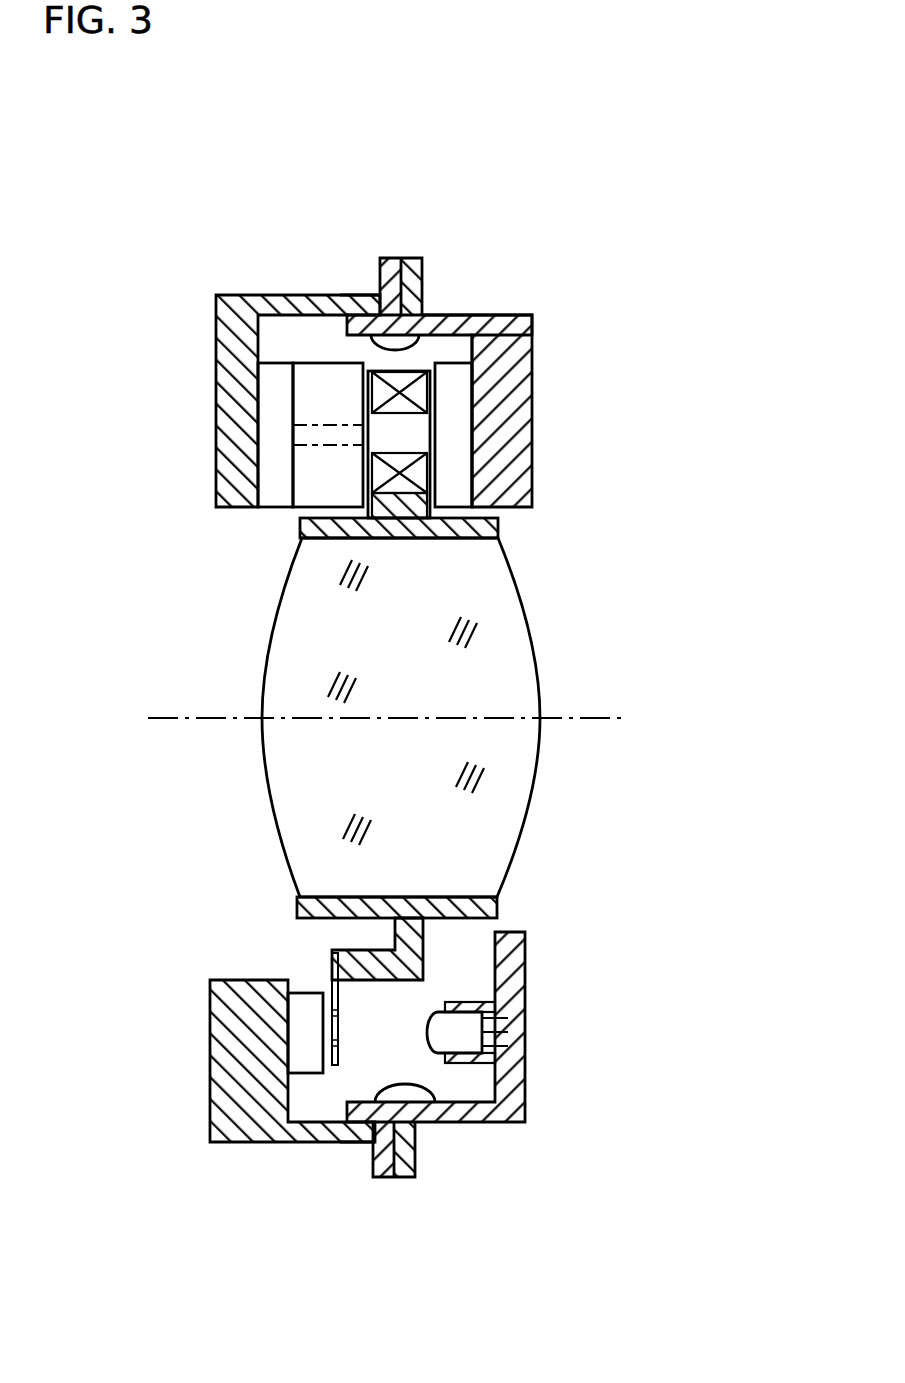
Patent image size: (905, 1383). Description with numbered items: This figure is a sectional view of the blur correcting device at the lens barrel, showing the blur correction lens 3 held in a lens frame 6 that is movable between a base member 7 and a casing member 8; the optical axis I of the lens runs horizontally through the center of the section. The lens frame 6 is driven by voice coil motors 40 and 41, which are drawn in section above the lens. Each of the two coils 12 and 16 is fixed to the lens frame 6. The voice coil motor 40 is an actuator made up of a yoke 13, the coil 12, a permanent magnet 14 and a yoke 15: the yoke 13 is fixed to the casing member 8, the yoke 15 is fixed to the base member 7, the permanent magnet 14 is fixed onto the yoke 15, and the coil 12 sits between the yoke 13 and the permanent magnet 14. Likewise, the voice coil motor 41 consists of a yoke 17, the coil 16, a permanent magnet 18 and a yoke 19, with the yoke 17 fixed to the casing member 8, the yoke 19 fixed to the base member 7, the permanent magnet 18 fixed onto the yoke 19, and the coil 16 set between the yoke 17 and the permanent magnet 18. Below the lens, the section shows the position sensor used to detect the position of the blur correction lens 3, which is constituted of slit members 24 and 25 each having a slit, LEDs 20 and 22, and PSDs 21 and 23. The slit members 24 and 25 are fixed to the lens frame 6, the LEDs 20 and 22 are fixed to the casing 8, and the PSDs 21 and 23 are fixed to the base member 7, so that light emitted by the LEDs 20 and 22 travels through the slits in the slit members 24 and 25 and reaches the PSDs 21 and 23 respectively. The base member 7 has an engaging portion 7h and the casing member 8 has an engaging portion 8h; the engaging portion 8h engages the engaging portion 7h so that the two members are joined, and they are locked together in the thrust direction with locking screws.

The blur correction lens 3 is at (507, 627).
The lens frame 6 is at (499, 522).
The base member 7 is at (222, 455).
The casing member 8 is at (512, 456).
The engaging portion 7h is at (347, 295).
The engaging portion 8h is at (399, 370).
The coil 12 is at (487, 312).
The coil 16 is at (457, 383).
The yoke 13 is at (544, 312).
The yoke 17 is at (544, 312).
The permanent magnet 14 is at (340, 312).
The permanent magnet 18 is at (320, 385).
The yoke 15 is at (230, 312).
The yoke 19 is at (282, 390).
The LED 20 is at (573, 1036).
The LED 22 is at (470, 1037).
The PSD (position sensitive detector) 21 is at (229, 1106).
The PSD (position sensitive detector) 23 is at (312, 1060).
The slit member 24 is at (280, 1118).
The slit member 25 is at (333, 1055).
The voice coil motor 40 is at (413, 279).
The voice coil motor 41 is at (413, 279).
The optical axis I is at (606, 718).